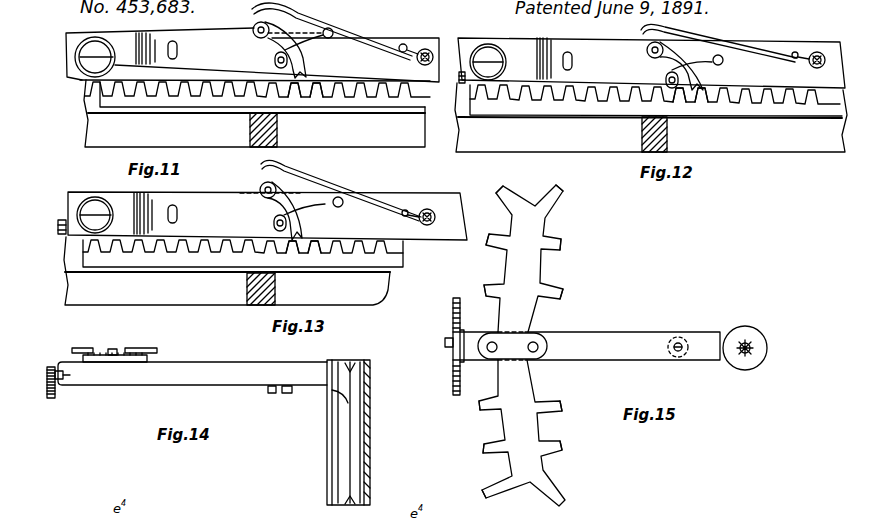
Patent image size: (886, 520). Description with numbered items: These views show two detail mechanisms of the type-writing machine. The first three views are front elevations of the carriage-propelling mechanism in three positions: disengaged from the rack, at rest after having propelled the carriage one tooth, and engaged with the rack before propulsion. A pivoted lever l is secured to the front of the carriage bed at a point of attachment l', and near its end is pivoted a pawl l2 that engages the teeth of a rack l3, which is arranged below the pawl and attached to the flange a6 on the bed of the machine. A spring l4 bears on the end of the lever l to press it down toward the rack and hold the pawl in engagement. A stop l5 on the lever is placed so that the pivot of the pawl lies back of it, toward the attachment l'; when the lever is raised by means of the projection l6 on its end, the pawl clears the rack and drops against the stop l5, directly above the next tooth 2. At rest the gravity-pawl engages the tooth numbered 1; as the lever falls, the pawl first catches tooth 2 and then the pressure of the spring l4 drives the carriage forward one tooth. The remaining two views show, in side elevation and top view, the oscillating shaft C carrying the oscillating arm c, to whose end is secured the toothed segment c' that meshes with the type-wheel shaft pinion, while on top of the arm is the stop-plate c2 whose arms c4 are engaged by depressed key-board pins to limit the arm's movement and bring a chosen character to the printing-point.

In FIG. 11, the pivoted lever l is at (252, 55).
In FIG. 12, the pivoted lever l is at (651, 63).
In FIG. 13, the pivoted lever l is at (267, 216).
In FIG. 11, the point of attachment l' is at (103, 57).
In FIG. 12, the point of attachment l' is at (496, 62).
In FIG. 13, the point of attachment l' is at (103, 215).
In FIG. 11, the pawl l2 is at (296, 54).
In FIG. 12, the pawl l2 is at (679, 66).
In FIG. 13, the pawl l2 is at (296, 220).
In FIG. 11, the rack l3 is at (255, 94).
In FIG. 12, the rack l3 is at (656, 100).
In FIG. 13, the rack l3 is at (243, 253).
In FIG. 11, the spring l4 is at (348, 26).
In FIG. 12, the spring l4 is at (728, 37).
In FIG. 13, the spring l4 is at (348, 188).
In FIG. 11, the stop l5 is at (273, 62).
In FIG. 12, the stop l5 is at (662, 92).
In FIG. 13, the stop l5 is at (258, 254).
In FIG. 11, the projection l6 is at (339, 44).
In FIG. 12, the projection l6 is at (723, 63).
In FIG. 13, the projection l6 is at (346, 211).
In FIG. 11, the tooth on the rack 1 is at (317, 96).
In FIG. 12, the tooth on the rack 1 is at (701, 101).
In FIG. 13, the tooth on the rack 1 is at (316, 254).
In FIG. 11, the next tooth on the rack 2 is at (294, 96).
In FIG. 12, the next tooth on the rack 2 is at (679, 101).
In FIG. 13, the next tooth on the rack 2 is at (292, 254).
In FIG. 12, the flange a6 is at (453, 79).
In FIG. 13, the flange a6 is at (53, 218).
In FIG. 14, the oscillating arm c is at (192, 377).
In FIG. 15, the oscillating arm c is at (586, 346).
In FIG. 14, the toothed segment c' is at (61, 391).
In FIG. 15, the toothed segment c' is at (450, 346).
In FIG. 14, the stop-plate c2 is at (100, 355).
In FIG. 15, the stop-plate c2 is at (522, 345).
In FIG. 14, the arms on the stop-plate c4 is at (160, 351).
In FIG. 15, the arms on the stop-plate c4 is at (495, 437).
In FIG. 14, the oscillating shaft C is at (348, 432).
In FIG. 15, the oscillating shaft C is at (760, 345).